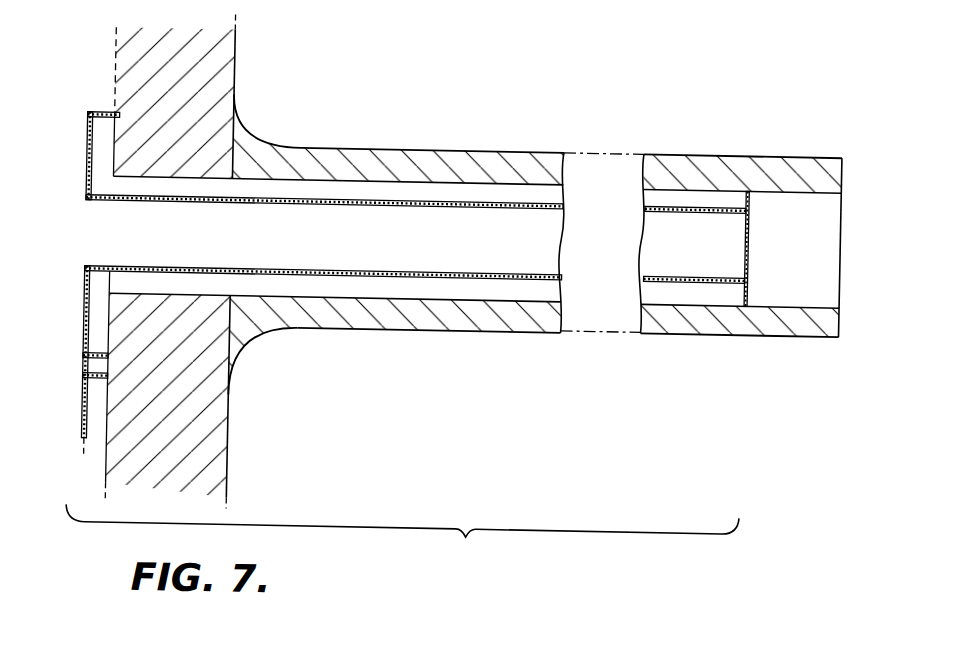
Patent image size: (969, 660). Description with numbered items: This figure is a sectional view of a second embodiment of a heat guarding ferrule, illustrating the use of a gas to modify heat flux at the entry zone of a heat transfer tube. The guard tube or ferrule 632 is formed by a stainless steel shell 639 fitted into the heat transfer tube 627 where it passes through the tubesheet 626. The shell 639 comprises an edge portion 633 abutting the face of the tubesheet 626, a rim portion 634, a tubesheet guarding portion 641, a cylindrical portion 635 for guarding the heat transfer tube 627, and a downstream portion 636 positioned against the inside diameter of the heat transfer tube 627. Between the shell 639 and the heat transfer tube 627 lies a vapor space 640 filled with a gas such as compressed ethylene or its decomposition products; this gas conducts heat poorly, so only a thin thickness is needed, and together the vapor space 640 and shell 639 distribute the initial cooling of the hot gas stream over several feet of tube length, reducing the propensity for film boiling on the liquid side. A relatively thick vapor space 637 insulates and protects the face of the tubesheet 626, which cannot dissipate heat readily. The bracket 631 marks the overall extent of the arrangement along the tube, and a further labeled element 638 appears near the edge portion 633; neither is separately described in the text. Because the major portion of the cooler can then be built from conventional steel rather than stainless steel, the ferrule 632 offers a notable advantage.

The tubesheet 626 is at (217, 56).
The heat transfer tube 627 is at (718, 154).
The heat pipe assembly 631 is at (402, 536).
The guard tube or ferrule 632 is at (75, 117).
The edge portion 633 is at (103, 112).
The rim portion 634 is at (84, 158).
The cylindrical tube guarding portion 635 is at (464, 201).
The downstream portion 636 is at (762, 170).
The vapor space 637 is at (101, 160).
The lower web 638 is at (110, 364).
The stainless steel shell 639 is at (82, 291).
The vapor space 640 is at (489, 186).
The tubesheet guarding portion 641 is at (196, 202).